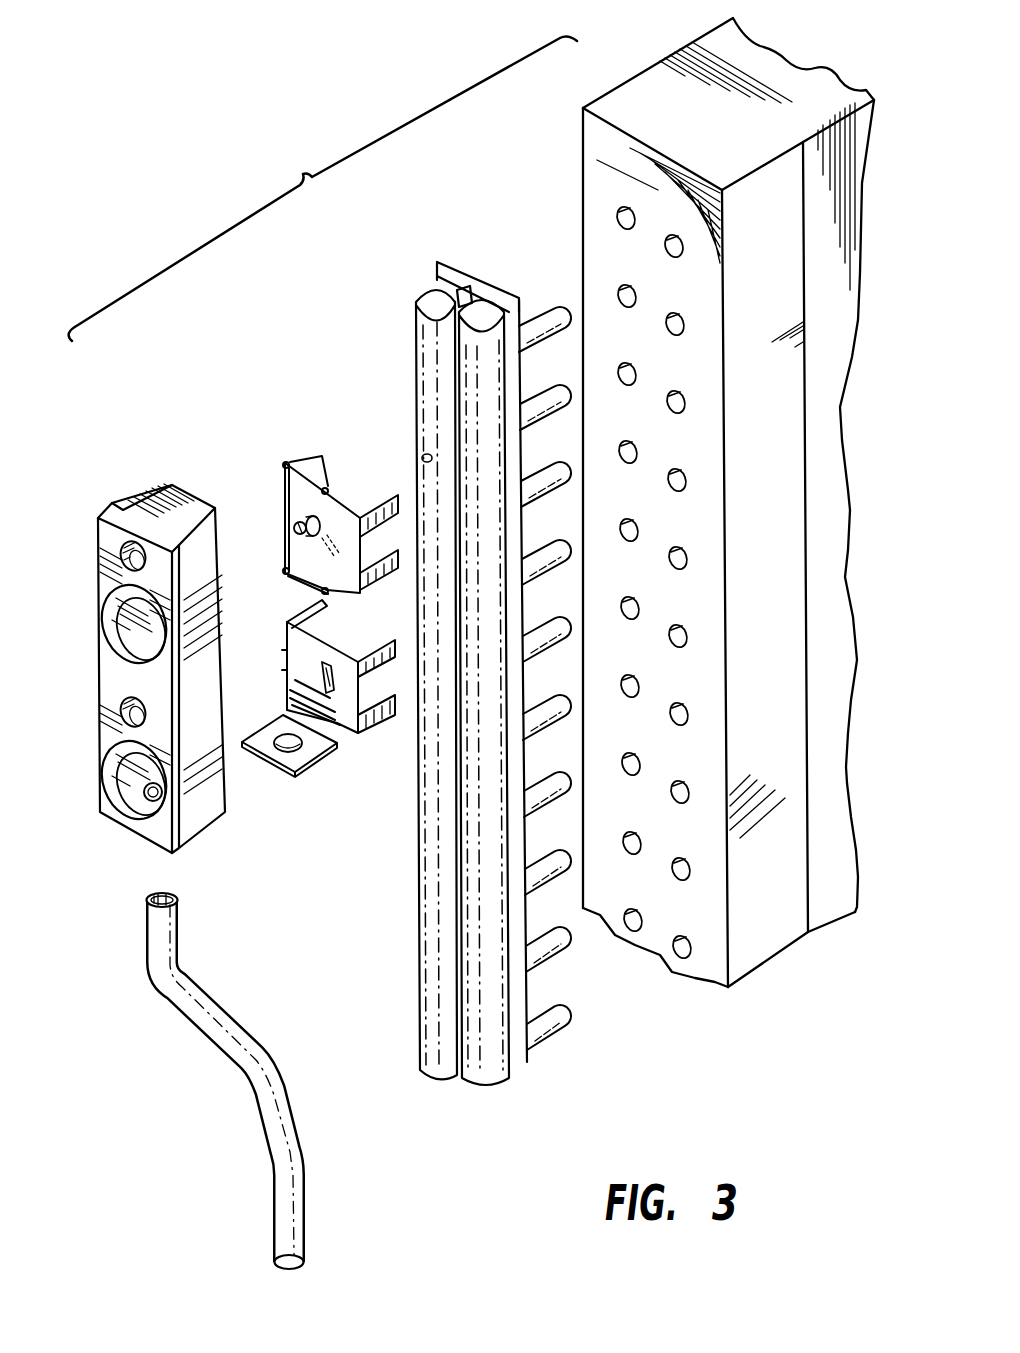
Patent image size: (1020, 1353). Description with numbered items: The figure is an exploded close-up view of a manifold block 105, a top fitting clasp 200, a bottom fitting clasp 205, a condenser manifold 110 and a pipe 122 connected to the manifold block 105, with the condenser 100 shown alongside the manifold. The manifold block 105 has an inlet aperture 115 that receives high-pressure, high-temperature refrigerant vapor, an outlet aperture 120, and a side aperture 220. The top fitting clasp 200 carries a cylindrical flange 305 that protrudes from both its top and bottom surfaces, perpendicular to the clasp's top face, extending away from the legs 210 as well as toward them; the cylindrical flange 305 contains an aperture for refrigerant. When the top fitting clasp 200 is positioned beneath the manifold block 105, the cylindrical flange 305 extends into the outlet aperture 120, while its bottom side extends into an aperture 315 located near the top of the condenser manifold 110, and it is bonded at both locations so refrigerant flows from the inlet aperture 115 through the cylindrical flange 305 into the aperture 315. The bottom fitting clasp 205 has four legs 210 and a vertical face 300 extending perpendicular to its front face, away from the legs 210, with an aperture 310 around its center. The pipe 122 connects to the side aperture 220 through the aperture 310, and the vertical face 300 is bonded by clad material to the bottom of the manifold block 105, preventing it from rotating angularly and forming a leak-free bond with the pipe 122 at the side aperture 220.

The condenser 100 is at (798, 978).
The manifold block 105 is at (139, 659).
The condenser manifold 110 is at (427, 303).
The inlet aperture 115 is at (120, 637).
The outlet aperture 120 is at (110, 792).
The pipe 122 is at (192, 1030).
The top fitting clasp 200 is at (296, 487).
The bottom fitting clasp 205 is at (304, 732).
The legs 210 is at (378, 498).
The side aperture 220 is at (140, 802).
The vertical face 300 is at (293, 777).
The cylindrical flange 305 is at (293, 542).
The aperture 310 is at (255, 755).
The aperture 315 is at (427, 452).